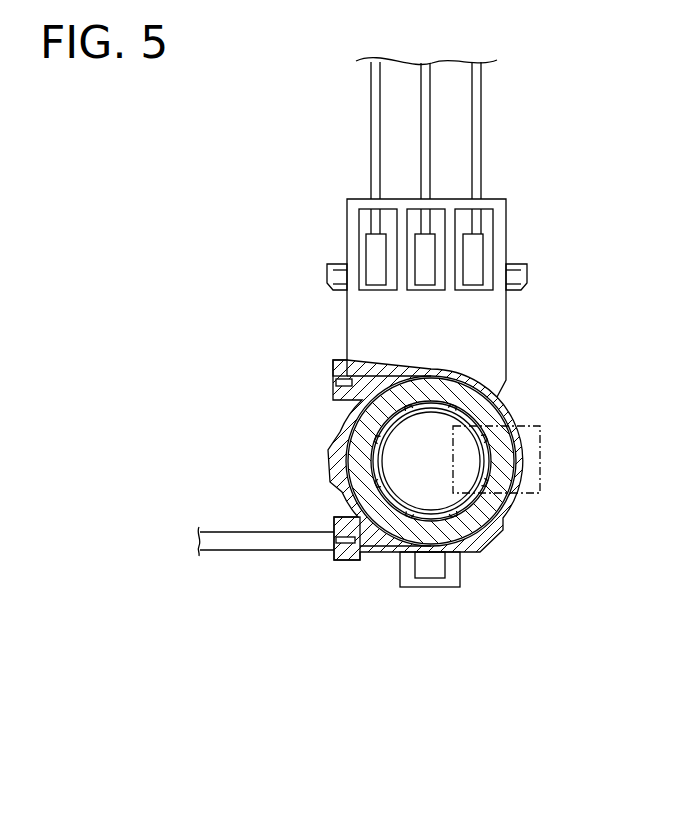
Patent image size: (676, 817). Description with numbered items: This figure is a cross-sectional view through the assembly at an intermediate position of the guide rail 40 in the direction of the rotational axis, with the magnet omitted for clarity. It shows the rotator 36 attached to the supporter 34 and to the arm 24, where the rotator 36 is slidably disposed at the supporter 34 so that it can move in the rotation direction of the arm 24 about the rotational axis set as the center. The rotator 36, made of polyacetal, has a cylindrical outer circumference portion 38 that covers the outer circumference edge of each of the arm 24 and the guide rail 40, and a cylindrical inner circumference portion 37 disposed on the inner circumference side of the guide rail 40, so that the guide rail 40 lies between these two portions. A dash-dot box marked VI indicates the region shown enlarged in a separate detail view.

The arm 24 is at (245, 542).
The supporter 34 is at (500, 327).
The rotator 36 is at (338, 356).
The inner circumference portion 37 is at (498, 522).
The outer circumference portion 38 is at (505, 407).
The guide rail 40 is at (490, 505).
The detail region VI is at (541, 447).